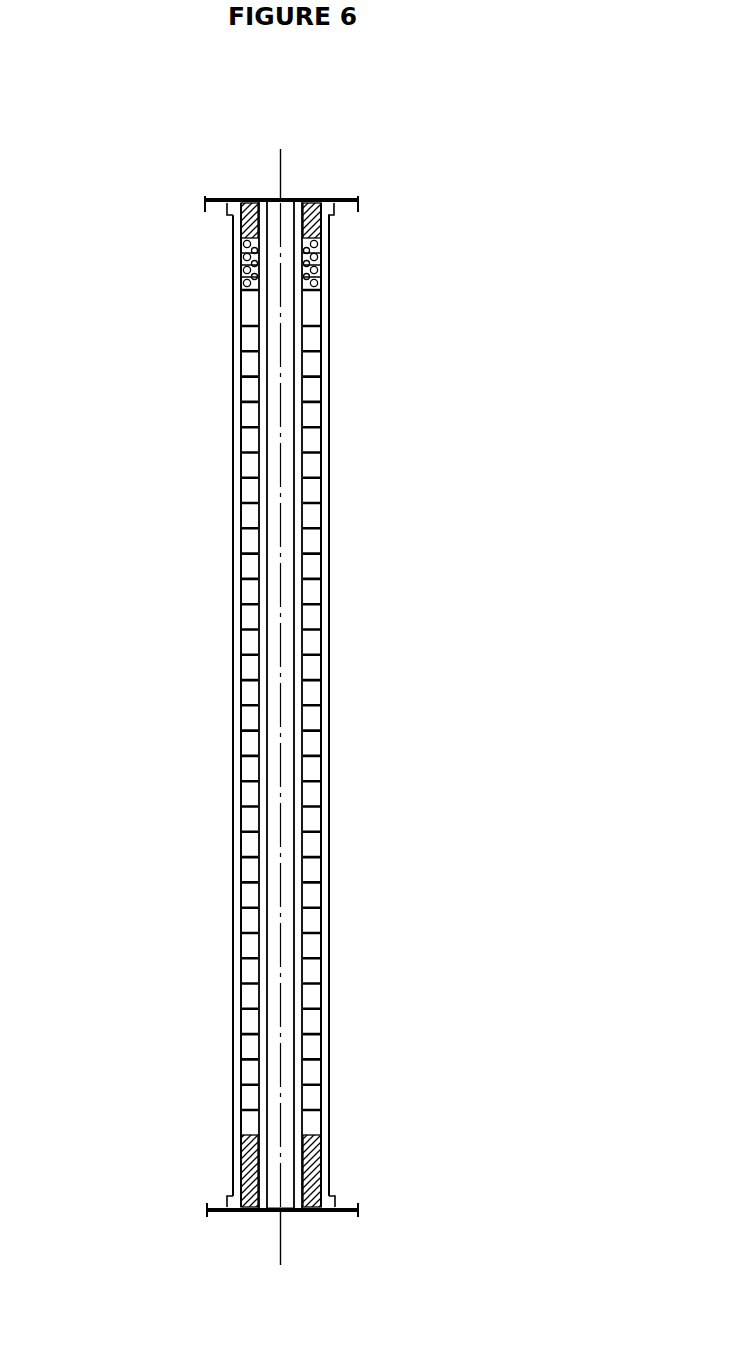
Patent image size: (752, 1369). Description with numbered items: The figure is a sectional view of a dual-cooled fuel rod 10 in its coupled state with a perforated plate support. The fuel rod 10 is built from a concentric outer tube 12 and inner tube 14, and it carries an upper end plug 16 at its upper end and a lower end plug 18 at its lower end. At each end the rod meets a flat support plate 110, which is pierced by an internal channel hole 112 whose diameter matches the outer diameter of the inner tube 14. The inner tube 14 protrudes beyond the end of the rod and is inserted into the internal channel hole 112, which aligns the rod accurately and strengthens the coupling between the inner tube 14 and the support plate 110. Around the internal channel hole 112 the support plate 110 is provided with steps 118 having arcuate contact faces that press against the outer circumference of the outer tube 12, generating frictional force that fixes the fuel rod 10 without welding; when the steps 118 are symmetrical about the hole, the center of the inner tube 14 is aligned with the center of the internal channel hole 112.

The dual-cooled fuel rod 10 is at (405, 529).
The outer tube 12 is at (329, 420).
The inner tube 14 is at (298, 340).
The upper end plug 16 is at (318, 231).
The lower end plug 18 is at (327, 1134).
The support plate 110 is at (214, 1213).
The internal channel hole 112 is at (277, 1212).
The step 118 is at (228, 1196).